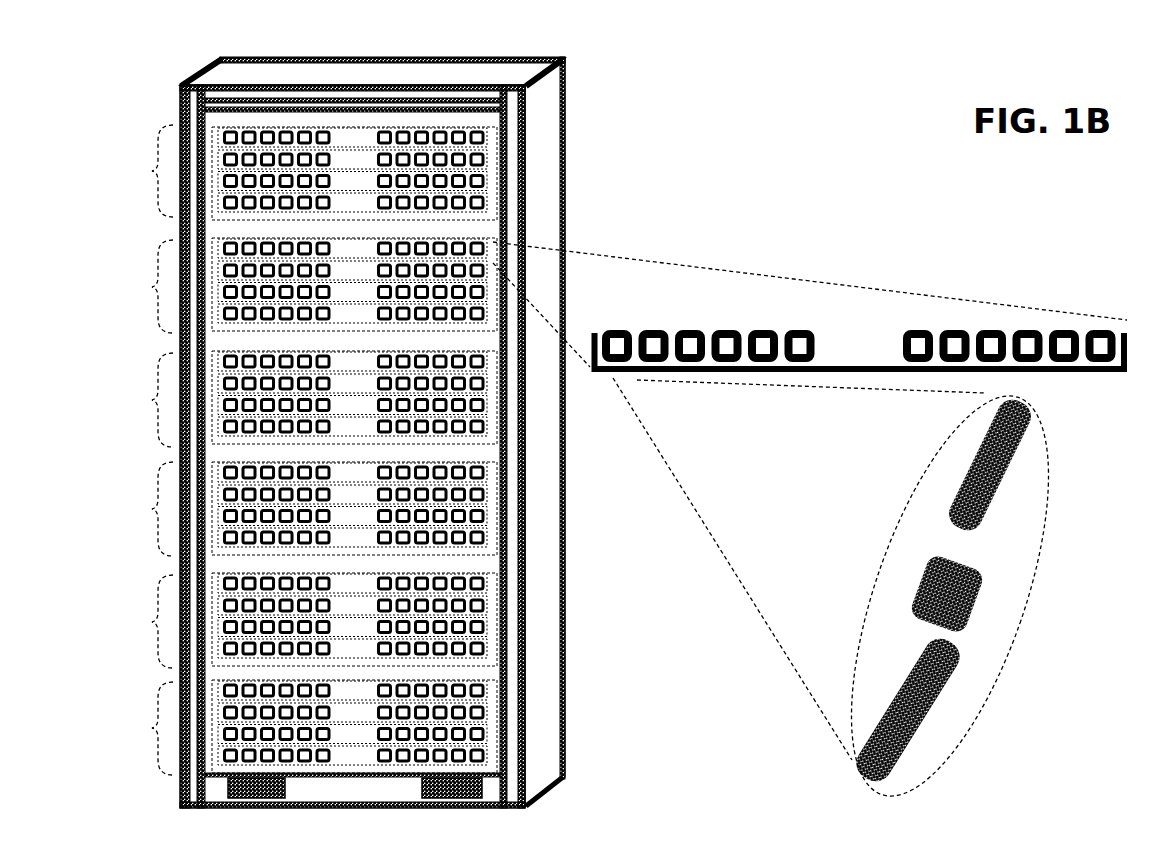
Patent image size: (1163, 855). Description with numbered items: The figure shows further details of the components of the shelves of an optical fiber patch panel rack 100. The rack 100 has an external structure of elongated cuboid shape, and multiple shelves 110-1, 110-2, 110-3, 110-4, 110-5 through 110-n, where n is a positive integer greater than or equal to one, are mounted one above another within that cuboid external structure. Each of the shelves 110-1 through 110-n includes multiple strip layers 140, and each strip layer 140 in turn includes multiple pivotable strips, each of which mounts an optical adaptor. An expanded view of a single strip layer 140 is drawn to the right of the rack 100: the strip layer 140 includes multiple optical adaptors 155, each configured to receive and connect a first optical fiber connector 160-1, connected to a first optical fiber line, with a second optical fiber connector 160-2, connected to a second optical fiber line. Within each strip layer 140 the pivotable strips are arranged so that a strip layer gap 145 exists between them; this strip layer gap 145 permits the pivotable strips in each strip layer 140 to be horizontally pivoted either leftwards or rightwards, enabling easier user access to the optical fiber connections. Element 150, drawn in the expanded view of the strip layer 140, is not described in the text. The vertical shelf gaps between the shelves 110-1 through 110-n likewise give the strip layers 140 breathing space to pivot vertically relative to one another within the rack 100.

The optical fiber patch panel rack 100 is at (170, 91).
The shelf 110-1 is at (142, 171).
The shelf 110-2 is at (142, 287).
The shelf 110-3 is at (142, 400).
The shelf 110-4 is at (142, 509).
The shelf 110-5 is at (142, 622).
The shelf 110-n is at (142, 728).
The strip layer 140 is at (1120, 247).
The strip layer gap 145 is at (328, 123).
The port 150 is at (615, 330).
The optical adaptor 155 is at (988, 602).
The first optical fiber connector 160-1 is at (915, 728).
The second optical fiber connector 160-2 is at (1003, 497).